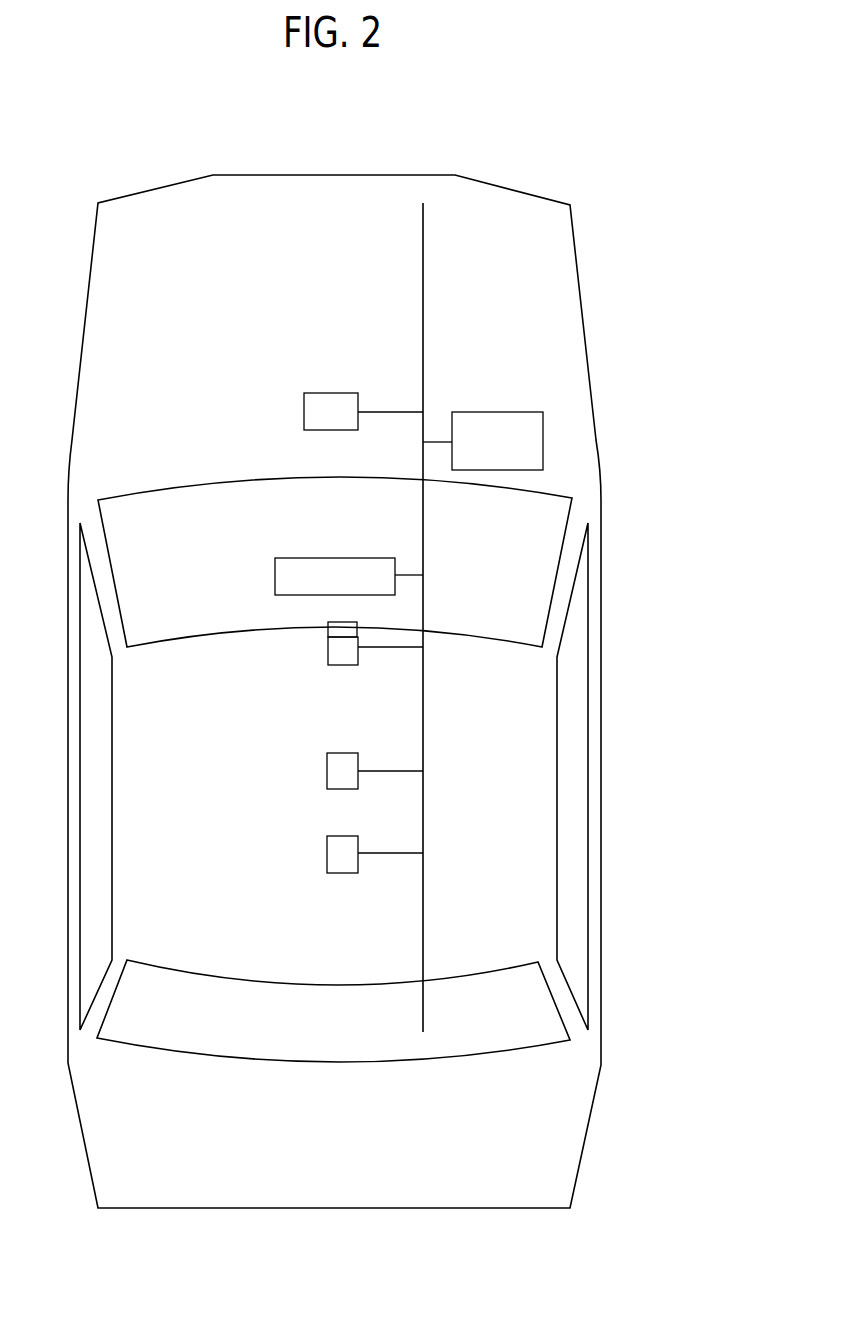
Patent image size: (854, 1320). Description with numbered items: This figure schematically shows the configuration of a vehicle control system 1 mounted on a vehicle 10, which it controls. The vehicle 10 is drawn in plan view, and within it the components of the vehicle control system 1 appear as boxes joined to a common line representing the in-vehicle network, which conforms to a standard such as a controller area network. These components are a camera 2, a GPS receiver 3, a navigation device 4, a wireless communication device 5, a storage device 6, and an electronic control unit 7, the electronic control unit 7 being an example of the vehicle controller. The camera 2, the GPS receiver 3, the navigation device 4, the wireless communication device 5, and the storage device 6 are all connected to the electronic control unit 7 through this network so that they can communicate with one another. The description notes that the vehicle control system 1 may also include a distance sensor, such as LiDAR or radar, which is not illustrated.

The vehicle control system 1 is at (691, 1191).
The vehicle 10 is at (601, 980).
The camera 2 is at (328, 648).
The GPS receiver 3 is at (327, 771).
The navigation device 4 is at (275, 576).
The wireless communication device 5 is at (327, 853).
The storage device 6 is at (304, 410).
The electronic control unit 7 is at (543, 425).